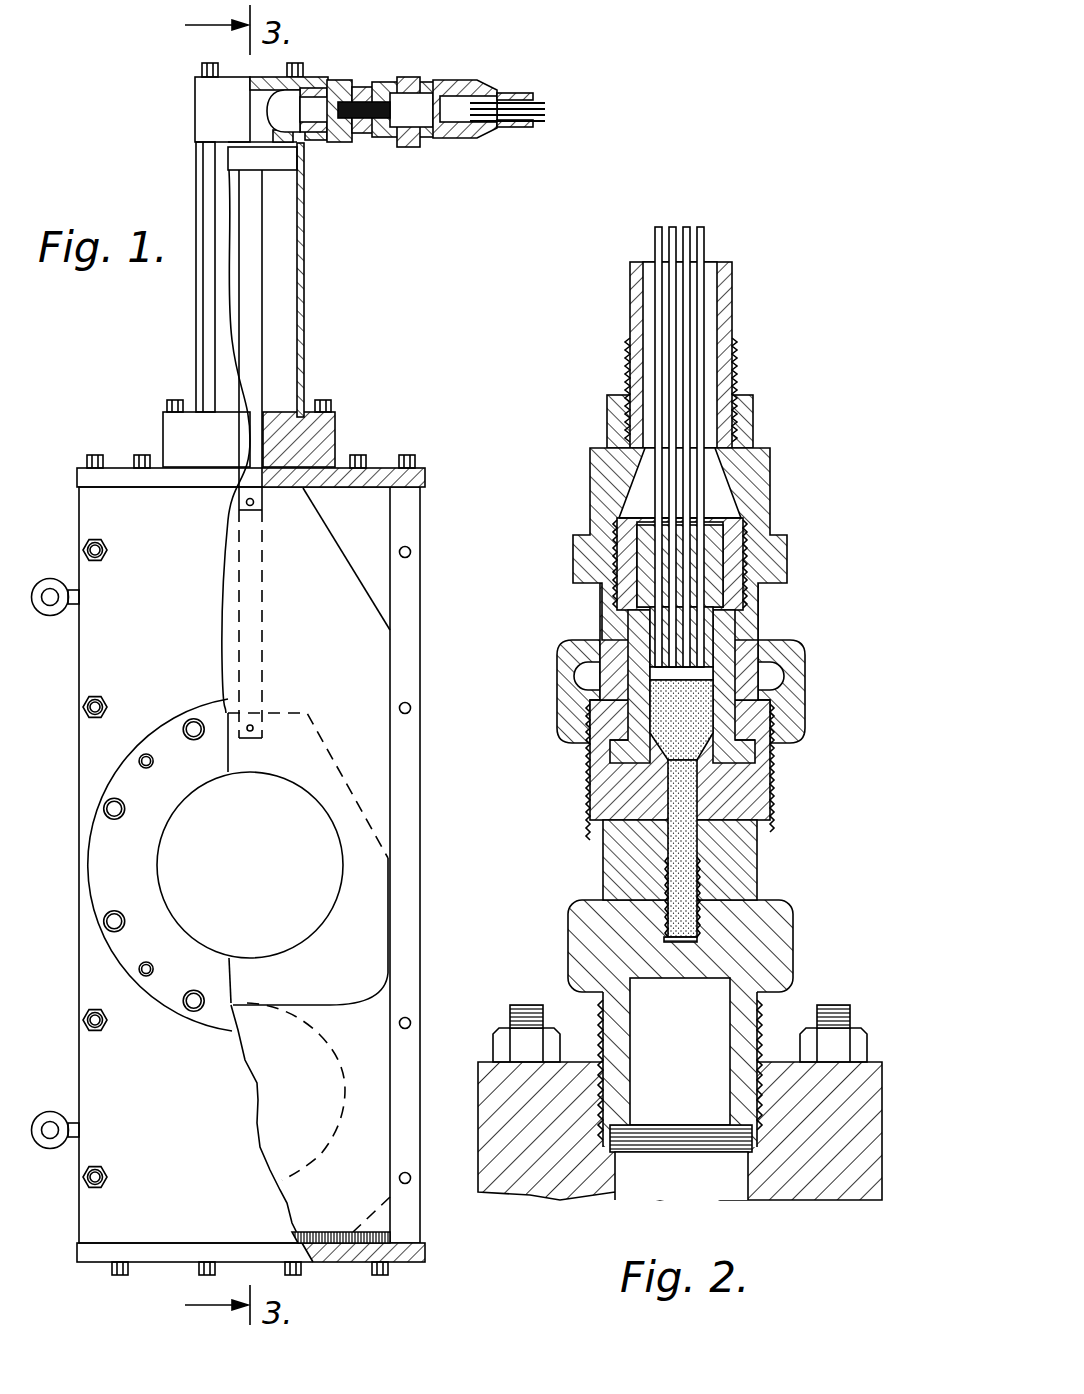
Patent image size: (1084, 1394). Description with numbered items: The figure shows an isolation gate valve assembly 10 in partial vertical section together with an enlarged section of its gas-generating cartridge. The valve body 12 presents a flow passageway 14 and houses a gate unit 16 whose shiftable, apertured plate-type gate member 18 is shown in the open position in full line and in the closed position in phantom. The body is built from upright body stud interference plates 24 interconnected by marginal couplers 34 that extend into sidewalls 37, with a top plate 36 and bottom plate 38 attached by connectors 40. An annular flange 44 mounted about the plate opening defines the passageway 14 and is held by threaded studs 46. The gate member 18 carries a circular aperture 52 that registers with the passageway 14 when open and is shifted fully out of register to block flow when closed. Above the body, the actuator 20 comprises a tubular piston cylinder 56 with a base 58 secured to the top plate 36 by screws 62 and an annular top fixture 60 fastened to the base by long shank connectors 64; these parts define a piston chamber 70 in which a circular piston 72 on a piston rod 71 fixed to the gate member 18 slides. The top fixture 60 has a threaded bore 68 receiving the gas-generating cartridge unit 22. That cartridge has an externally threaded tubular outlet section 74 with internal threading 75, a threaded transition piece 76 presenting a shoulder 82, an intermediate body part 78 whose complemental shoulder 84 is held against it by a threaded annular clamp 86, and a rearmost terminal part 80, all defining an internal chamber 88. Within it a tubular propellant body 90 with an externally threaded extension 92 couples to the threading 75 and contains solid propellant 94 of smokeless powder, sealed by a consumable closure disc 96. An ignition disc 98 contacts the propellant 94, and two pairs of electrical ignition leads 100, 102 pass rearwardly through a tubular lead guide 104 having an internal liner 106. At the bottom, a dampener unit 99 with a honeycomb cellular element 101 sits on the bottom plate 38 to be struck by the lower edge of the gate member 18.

In FIG. 1, the isolation gate valve assembly 10 is at (442, 222).
In FIG. 1, the valve body 12 is at (422, 440).
In FIG. 1, the flow passageway 14 is at (345, 1077).
In FIG. 1, the gate unit 16 is at (285, 326).
In FIG. 1, the gate member 18 is at (362, 625).
In FIG. 1, the actuator 20 is at (505, 70).
In FIG. 2, the actuator 20 is at (776, 356).
In FIG. 1, the gas-generating cartridge unit 22 is at (432, 85).
In FIG. 2, the gas-generating cartridge unit 22 is at (750, 752).
In FIG. 1, the body stud interference plate 24 is at (100, 1078).
In FIG. 1, the marginal couplers 34 is at (85, 704).
In FIG. 1, the top plate 36 is at (425, 483).
In FIG. 1, the sidewalls 37 is at (408, 1128).
In FIG. 1, the bottom plate 38 is at (408, 1265).
In FIG. 1, the connectors 40 is at (93, 462).
In FIG. 1, the annular flange 44 is at (100, 876).
In FIG. 1, the threaded studs 46 is at (107, 806).
In FIG. 1, the circular aperture 52 is at (342, 848).
In FIG. 1, the piston cylinder 56 is at (222, 332).
In FIG. 1, the base 58 is at (335, 432).
In FIG. 1, the top fixture 60 is at (207, 108).
In FIG. 2, the top fixture 60 is at (835, 1192).
In FIG. 1, the screws 62 is at (327, 408).
In FIG. 1, the long shank connectors 64 is at (205, 205).
In FIG. 1, the threaded bore 68 is at (312, 85).
In FIG. 2, the threaded bore 68 is at (765, 1130).
In FIG. 1, the piston chamber 70 is at (290, 357).
In FIG. 1, the piston rod 71 is at (258, 220).
In FIG. 1, the piston 72 is at (290, 163).
In FIG. 2, the tubular outlet section 74 is at (785, 930).
In FIG. 2, the internal threading 75 is at (655, 820).
In FIG. 2, the transition piece 76 is at (765, 812).
In FIG. 2, the intermediate body part 78 is at (758, 637).
In FIG. 2, the terminal part 80 is at (770, 478).
In FIG. 2, the shoulder 82 is at (790, 690).
In FIG. 2, the complemental shoulder 84 is at (785, 673).
In FIG. 2, the threaded annular clamp 86 is at (795, 717).
In FIG. 2, the internal chamber 88 is at (735, 547).
In FIG. 2, the propellant body 90 is at (730, 623).
In FIG. 2, the externally threaded extension 92 is at (700, 868).
In FIG. 2, the solid propellant 94 is at (640, 735).
In FIG. 2, the consumable closure disc 96 is at (683, 940).
In FIG. 2, the ignition disc 98 is at (660, 676).
In FIG. 1, the dampener unit 99 is at (298, 1228).
In FIG. 2, the electrical ignition leads 100 is at (665, 212).
In FIG. 1, the honeycomb cellular element 101 is at (392, 1240).
In FIG. 2, the electrical ignition leads 102 is at (724, 212).
In FIG. 2, the tubular lead guide 104 is at (637, 577).
In FIG. 2, the internal liner 106 is at (622, 518).